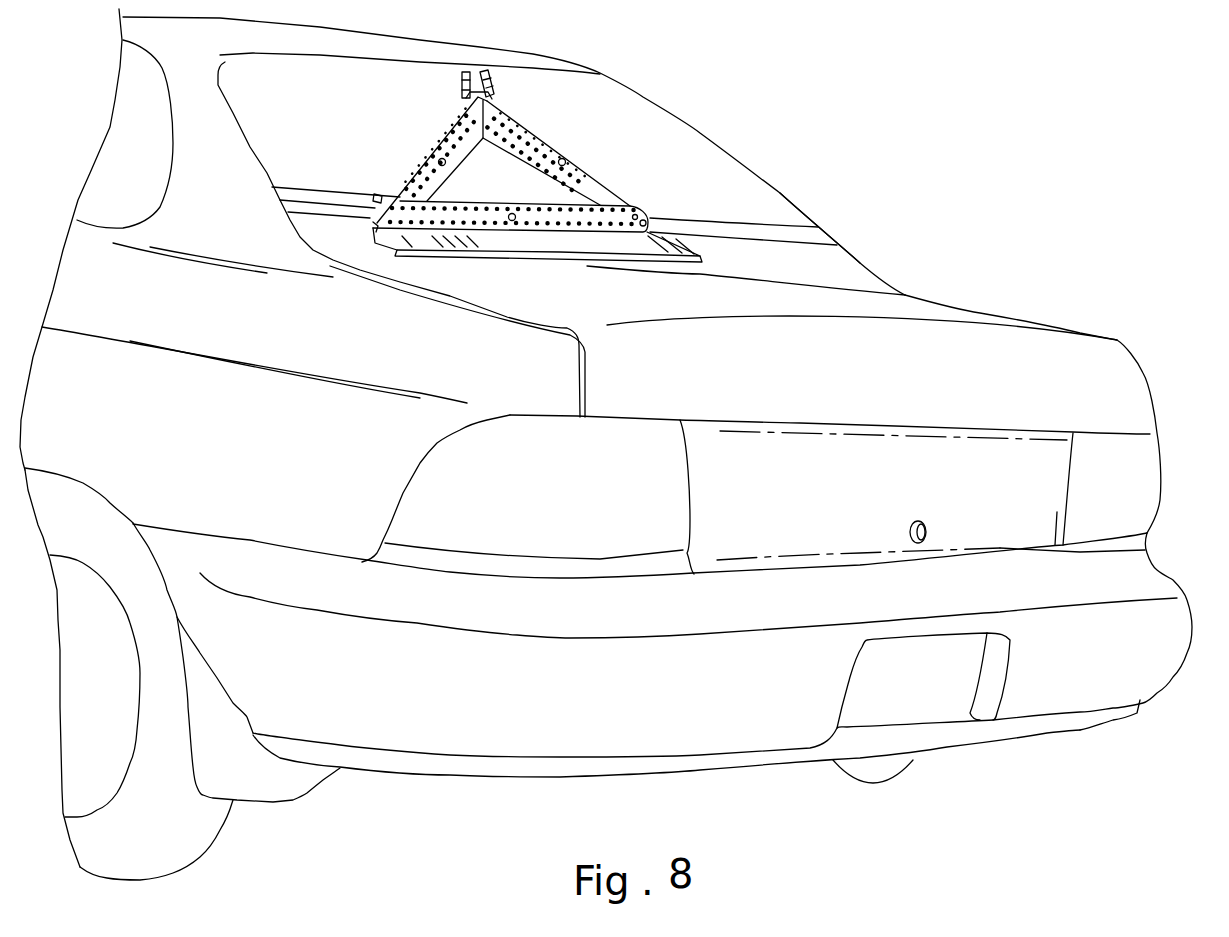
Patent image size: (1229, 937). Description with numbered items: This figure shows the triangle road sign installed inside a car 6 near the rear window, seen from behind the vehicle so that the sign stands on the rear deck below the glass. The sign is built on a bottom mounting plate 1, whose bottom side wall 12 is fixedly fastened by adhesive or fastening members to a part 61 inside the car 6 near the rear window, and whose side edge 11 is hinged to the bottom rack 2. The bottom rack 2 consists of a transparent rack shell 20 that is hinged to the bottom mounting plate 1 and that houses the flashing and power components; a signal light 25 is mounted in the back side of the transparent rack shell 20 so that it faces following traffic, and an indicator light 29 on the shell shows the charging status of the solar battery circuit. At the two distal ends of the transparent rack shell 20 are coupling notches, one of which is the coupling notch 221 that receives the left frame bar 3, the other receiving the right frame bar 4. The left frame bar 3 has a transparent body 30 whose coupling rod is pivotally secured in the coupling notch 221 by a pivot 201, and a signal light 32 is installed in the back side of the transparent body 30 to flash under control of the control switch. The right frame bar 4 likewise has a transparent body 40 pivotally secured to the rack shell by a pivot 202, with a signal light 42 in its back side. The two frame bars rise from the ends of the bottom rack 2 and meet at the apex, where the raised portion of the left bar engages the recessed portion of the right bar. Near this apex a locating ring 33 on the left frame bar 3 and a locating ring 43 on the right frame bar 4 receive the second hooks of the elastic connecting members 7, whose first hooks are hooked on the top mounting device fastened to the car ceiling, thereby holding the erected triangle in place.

The bottom mounting plate 1 is at (484, 259).
The bottom rack 2 is at (597, 237).
The left frame bar 3 is at (397, 177).
The right frame bar 4 is at (527, 121).
The car 6 is at (873, 260).
The connecting member 7 is at (455, 86).
The side edge 11 is at (402, 252).
The bottom side wall 12 is at (440, 252).
The transparent rack shell 20 is at (488, 197).
The signal light 25 is at (515, 222).
The indicator light 29 is at (652, 222).
The transparent body 30 is at (428, 152).
The signal light 32 is at (435, 160).
The locating ring 33 is at (462, 104).
The transparent body 40 is at (571, 163).
The signal light 42 is at (564, 158).
The locating ring 43 is at (495, 87).
The part inside the car 61 is at (807, 263).
The pivot 201 is at (376, 225).
The pivot 202 is at (636, 214).
The coupling notch 221 is at (387, 195).